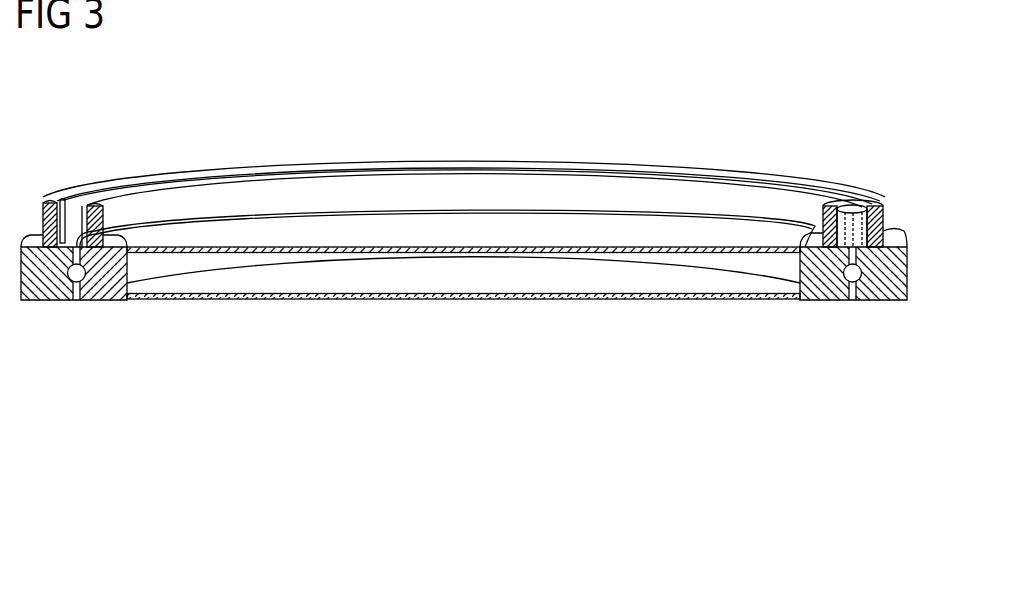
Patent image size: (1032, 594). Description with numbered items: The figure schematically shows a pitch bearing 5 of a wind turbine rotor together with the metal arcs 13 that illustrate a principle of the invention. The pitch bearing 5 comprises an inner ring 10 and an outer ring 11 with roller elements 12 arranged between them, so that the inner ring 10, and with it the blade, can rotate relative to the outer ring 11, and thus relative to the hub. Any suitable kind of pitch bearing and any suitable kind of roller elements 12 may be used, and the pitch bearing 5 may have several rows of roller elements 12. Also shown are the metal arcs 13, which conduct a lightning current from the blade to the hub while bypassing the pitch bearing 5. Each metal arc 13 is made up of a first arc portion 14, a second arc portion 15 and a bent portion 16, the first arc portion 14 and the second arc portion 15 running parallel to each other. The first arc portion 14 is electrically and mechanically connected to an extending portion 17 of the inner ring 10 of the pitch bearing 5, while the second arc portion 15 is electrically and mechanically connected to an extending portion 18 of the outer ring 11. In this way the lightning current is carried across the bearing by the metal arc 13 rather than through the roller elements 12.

The pitch bearing 5 is at (932, 397).
The inner ring 10 is at (812, 290).
The outer ring 11 is at (877, 290).
The roller elements 12 is at (849, 283).
The metal arc 13 is at (72, 198).
The first arc portion 14 is at (836, 194).
The second arc portion 15 is at (850, 205).
The bent portion 16 is at (852, 212).
The extending portion of the inner ring 17 is at (817, 226).
The extending portion of the outer ring 18 is at (893, 297).